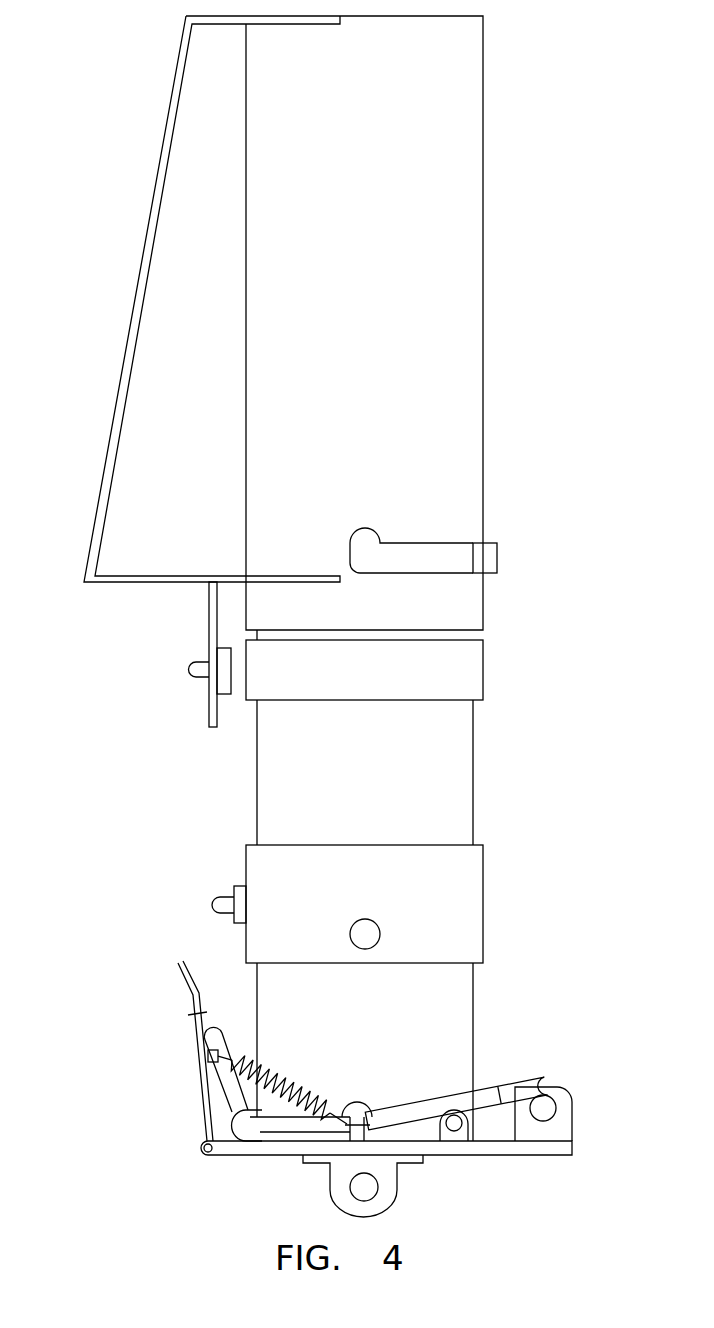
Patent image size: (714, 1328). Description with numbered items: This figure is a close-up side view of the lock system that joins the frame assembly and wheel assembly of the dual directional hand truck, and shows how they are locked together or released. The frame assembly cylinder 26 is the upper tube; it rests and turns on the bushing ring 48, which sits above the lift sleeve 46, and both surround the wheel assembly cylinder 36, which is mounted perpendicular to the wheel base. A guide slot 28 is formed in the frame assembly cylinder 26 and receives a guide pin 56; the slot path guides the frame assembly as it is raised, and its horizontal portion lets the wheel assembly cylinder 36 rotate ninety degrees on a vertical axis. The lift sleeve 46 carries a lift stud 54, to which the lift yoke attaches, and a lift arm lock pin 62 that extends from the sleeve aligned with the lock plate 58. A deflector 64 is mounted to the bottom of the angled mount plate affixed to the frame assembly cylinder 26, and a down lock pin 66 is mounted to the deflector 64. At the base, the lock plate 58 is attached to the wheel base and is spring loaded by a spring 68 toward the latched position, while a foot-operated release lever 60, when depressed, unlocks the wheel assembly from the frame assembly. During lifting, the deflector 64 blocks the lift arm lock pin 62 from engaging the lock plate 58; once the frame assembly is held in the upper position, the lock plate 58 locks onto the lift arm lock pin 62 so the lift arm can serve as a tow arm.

The frame assembly cylinder 26 is at (470, 607).
The guide slot 28 is at (412, 552).
The guide pin 56 is at (490, 558).
The bushing ring 48 is at (468, 676).
The wheel assembly cylinder 36 is at (452, 777).
The lift sleeve 46 is at (455, 878).
The lift stud 54 is at (370, 934).
The deflector 64 is at (208, 710).
The down lock pin 66 is at (194, 668).
The lift arm lock pin 62 is at (212, 898).
The lock plate 58 is at (197, 1035).
The spring 68 is at (210, 1095).
The release lever 60 is at (548, 1083).